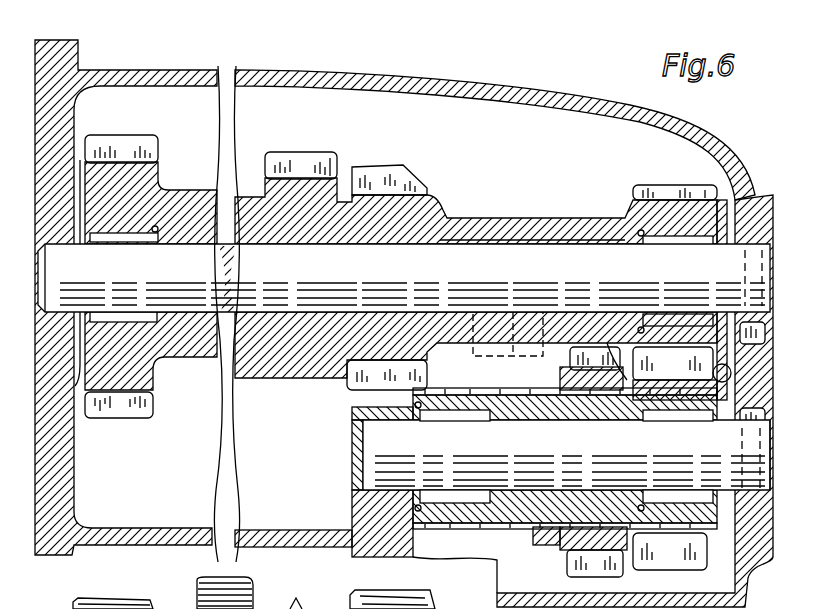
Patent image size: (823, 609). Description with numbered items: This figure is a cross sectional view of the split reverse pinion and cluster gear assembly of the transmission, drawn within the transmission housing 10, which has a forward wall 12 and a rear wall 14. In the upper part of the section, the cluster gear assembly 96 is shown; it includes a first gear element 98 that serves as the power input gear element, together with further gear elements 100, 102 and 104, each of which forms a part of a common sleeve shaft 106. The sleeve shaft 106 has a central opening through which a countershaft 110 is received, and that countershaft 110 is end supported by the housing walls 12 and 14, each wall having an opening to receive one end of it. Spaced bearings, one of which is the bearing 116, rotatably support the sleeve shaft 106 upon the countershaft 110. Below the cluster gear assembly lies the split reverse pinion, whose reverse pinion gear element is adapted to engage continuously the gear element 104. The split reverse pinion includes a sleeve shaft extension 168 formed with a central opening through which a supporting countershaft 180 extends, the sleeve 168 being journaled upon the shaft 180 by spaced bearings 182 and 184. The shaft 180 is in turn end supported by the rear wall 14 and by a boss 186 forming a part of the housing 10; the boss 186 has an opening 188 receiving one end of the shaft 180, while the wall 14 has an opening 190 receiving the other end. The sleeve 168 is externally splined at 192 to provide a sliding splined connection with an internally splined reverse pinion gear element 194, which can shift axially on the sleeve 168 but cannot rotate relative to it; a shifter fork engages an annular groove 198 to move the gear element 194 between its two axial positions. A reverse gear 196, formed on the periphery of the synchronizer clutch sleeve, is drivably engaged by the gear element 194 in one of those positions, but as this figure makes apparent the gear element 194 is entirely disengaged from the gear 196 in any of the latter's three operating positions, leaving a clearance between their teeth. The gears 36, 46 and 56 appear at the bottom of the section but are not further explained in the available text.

The transmission housing 10 is at (138, 547).
The forward wall 12 is at (40, 63).
The rear wall 14 is at (760, 194).
The gear 36 is at (433, 601).
The gear 46 is at (172, 590).
The gear 56 is at (48, 592).
The cluster gear assembly 96 is at (173, 194).
The first gear element 98 is at (144, 143).
The gear element 100 is at (318, 153).
The gear element 102 is at (410, 174).
The gear element 104 is at (677, 190).
The common sleeve shaft 106 is at (485, 213).
The countershaft 110 is at (541, 241).
The bearing 116 is at (659, 249).
The sleeve shaft extension 168 is at (513, 418).
The supporting countershaft 180 is at (374, 457).
The bearing 182 is at (647, 507).
The bearing 184 is at (430, 418).
The boss 186 is at (353, 409).
The opening 188 is at (368, 423).
The opening 190 is at (750, 480).
The external splines 192 is at (503, 528).
The reverse pinion gear element 194 is at (580, 540).
The reverse gear 196 is at (507, 357).
The annular groove 198 is at (557, 557).